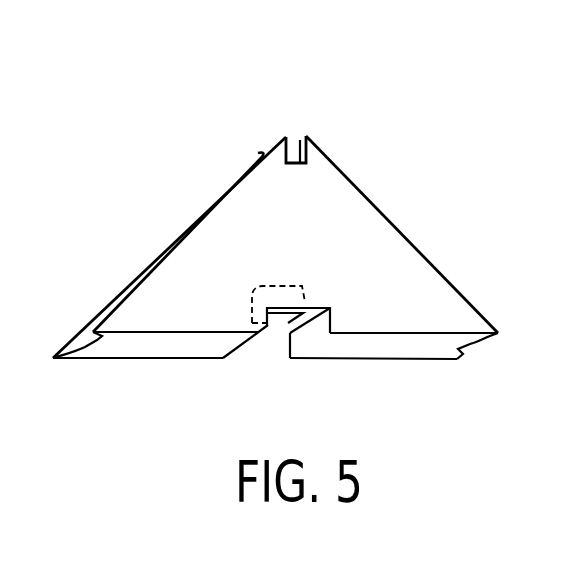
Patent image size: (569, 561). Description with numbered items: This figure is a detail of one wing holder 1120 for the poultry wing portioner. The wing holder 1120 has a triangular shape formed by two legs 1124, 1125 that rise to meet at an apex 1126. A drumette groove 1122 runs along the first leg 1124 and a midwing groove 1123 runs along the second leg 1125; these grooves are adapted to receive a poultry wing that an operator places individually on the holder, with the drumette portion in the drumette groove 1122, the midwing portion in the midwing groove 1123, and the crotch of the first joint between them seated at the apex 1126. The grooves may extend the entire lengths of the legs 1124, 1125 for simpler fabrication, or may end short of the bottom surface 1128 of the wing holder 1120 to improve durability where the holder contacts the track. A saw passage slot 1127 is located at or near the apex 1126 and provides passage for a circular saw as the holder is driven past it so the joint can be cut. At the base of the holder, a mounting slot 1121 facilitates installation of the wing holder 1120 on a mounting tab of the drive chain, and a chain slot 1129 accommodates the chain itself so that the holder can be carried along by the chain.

The wing holder 1120 is at (193, 91).
The mounting slot 1121 is at (272, 325).
The drumette groove 1122 is at (126, 284).
The midwing groove 1123 is at (468, 352).
The leg 1124 is at (201, 213).
The leg 1125 is at (393, 223).
The apex 1126 is at (296, 138).
The saw passage slot 1127 is at (308, 148).
The bottom surface 1128 is at (382, 348).
The chain slot 1129 is at (295, 327).